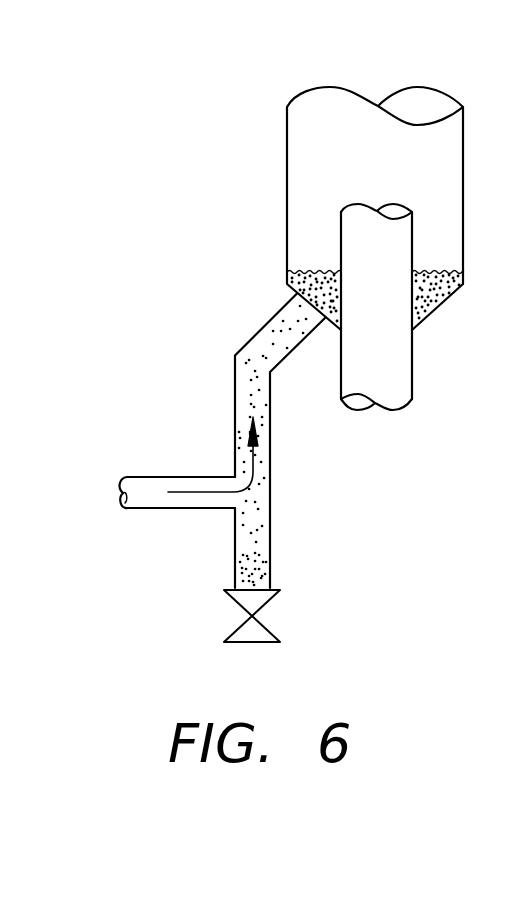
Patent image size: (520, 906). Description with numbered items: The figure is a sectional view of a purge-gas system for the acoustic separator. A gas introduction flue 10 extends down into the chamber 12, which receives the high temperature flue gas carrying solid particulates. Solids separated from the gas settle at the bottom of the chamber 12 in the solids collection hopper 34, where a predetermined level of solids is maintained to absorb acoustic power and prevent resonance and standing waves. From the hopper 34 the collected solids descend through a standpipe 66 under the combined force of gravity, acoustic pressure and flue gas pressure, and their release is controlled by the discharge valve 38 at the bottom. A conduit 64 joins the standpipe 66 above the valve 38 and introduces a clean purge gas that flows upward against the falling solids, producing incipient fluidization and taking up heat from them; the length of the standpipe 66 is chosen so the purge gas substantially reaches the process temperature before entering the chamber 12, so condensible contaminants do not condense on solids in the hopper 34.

The chamber 12 is at (287, 149).
The solids collection hopper 34 is at (442, 303).
The gas introduction flue 10 is at (412, 366).
The standpipe 66 is at (270, 413).
The conduit 64 is at (198, 475).
The discharge valve 38 is at (270, 629).